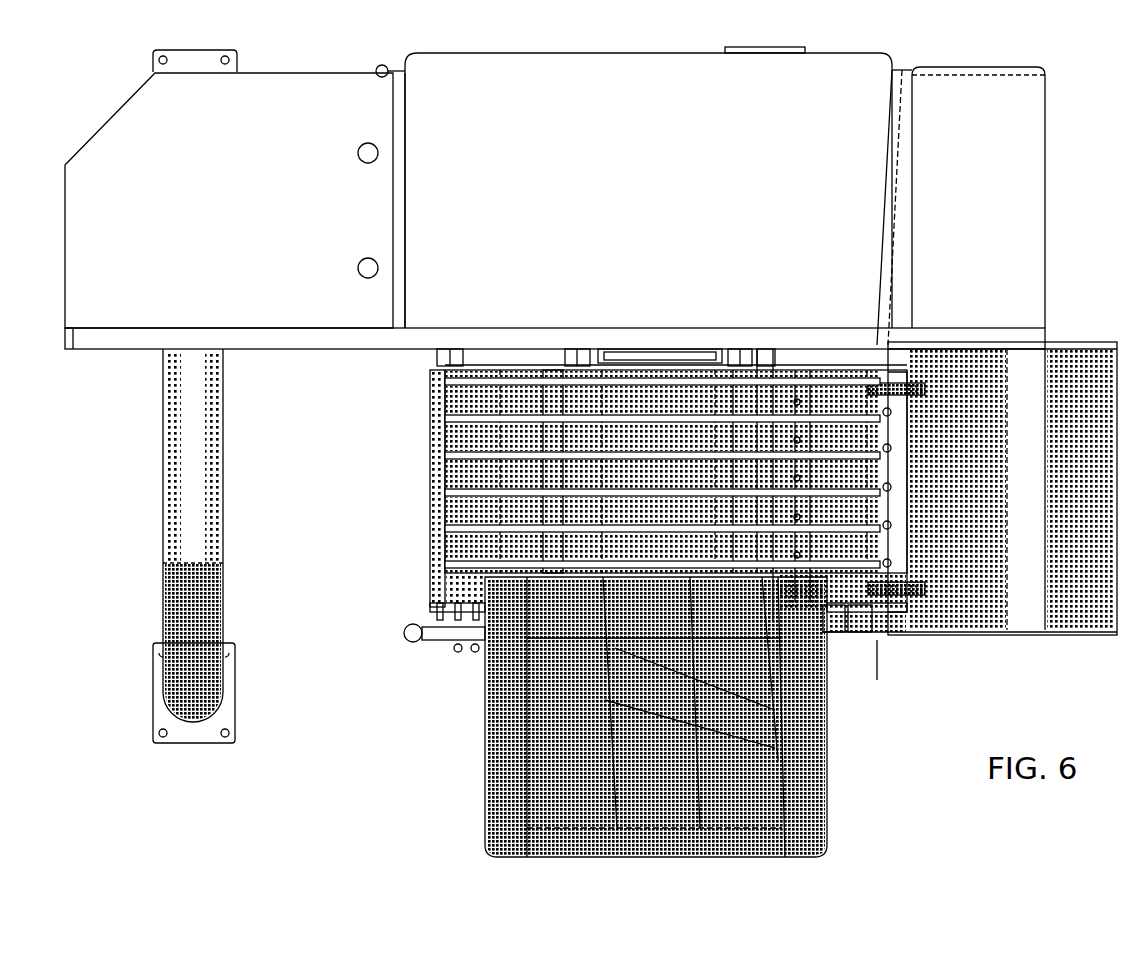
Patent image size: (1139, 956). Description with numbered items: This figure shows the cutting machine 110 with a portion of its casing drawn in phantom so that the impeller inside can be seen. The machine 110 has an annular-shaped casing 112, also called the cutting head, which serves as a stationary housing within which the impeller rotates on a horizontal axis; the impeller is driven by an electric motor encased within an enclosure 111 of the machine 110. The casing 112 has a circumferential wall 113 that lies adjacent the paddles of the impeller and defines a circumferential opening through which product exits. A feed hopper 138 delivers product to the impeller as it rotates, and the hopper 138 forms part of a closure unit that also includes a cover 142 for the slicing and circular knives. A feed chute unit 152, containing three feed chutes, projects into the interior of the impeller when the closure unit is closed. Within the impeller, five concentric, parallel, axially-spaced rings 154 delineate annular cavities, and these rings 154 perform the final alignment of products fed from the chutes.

The machine 110 is at (322, 777).
The enclosure 111 is at (513, 77).
The casing 112 is at (428, 585).
The circumferential wall 113 is at (437, 395).
The feed hopper 138 is at (820, 795).
The cover 142 is at (957, 622).
The feed chute unit 152 is at (657, 435).
The rings 154 is at (455, 565).